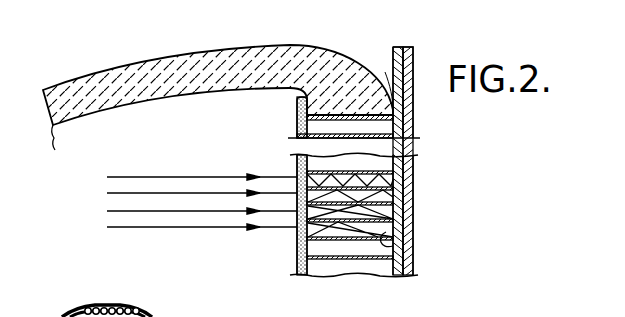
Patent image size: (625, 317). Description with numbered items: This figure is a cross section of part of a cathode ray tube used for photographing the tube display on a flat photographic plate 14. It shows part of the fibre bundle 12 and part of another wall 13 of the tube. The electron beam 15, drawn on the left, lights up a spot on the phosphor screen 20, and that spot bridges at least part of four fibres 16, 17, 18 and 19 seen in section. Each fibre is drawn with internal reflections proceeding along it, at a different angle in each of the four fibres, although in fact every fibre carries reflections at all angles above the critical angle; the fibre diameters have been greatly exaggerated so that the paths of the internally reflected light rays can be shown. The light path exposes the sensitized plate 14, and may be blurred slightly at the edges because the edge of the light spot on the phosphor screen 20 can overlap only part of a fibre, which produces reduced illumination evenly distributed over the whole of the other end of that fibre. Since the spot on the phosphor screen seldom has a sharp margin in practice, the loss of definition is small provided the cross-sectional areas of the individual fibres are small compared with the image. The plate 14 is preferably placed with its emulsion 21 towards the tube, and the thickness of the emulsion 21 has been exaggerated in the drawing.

The fibre bundle 12 is at (317, 125).
The wall 13 is at (155, 60).
The photographic plate 14 is at (405, 67).
The electron beam 15 is at (175, 228).
The fibre 16 is at (393, 172).
The fibre 17 is at (393, 192).
The fibre 18 is at (393, 213).
The fibre 19 is at (393, 247).
The phosphor screen 20 is at (297, 253).
The emulsion 21 is at (393, 55).